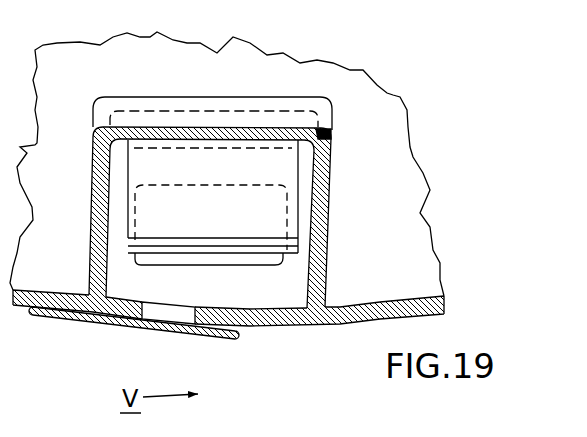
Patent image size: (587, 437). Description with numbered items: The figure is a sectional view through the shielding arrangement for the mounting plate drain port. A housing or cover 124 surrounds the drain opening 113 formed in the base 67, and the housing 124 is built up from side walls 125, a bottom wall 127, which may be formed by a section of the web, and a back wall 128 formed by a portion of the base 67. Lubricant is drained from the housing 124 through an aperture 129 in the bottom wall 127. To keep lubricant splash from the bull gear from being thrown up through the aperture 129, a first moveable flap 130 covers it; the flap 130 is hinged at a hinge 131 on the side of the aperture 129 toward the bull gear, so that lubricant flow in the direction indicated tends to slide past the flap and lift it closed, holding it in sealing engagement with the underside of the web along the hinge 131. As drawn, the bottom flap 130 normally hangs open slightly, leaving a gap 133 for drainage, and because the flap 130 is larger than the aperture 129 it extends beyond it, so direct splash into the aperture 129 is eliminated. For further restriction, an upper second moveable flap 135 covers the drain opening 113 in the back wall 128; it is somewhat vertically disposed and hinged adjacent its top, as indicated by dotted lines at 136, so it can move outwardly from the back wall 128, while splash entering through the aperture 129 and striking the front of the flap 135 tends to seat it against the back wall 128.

The base 67 is at (380, 198).
The drain opening 113 is at (249, 186).
The housing 124 is at (354, 108).
The side walls 125 is at (92, 172).
The bottom wall 127 is at (230, 310).
The back wall 128 is at (165, 272).
The aperture 129 is at (158, 302).
The first moveable flap 130 is at (157, 335).
The hinge 131 is at (42, 323).
The gap 133 is at (243, 333).
The second moveable flap 135 is at (186, 157).
The hinge of second flap 136 is at (191, 132).